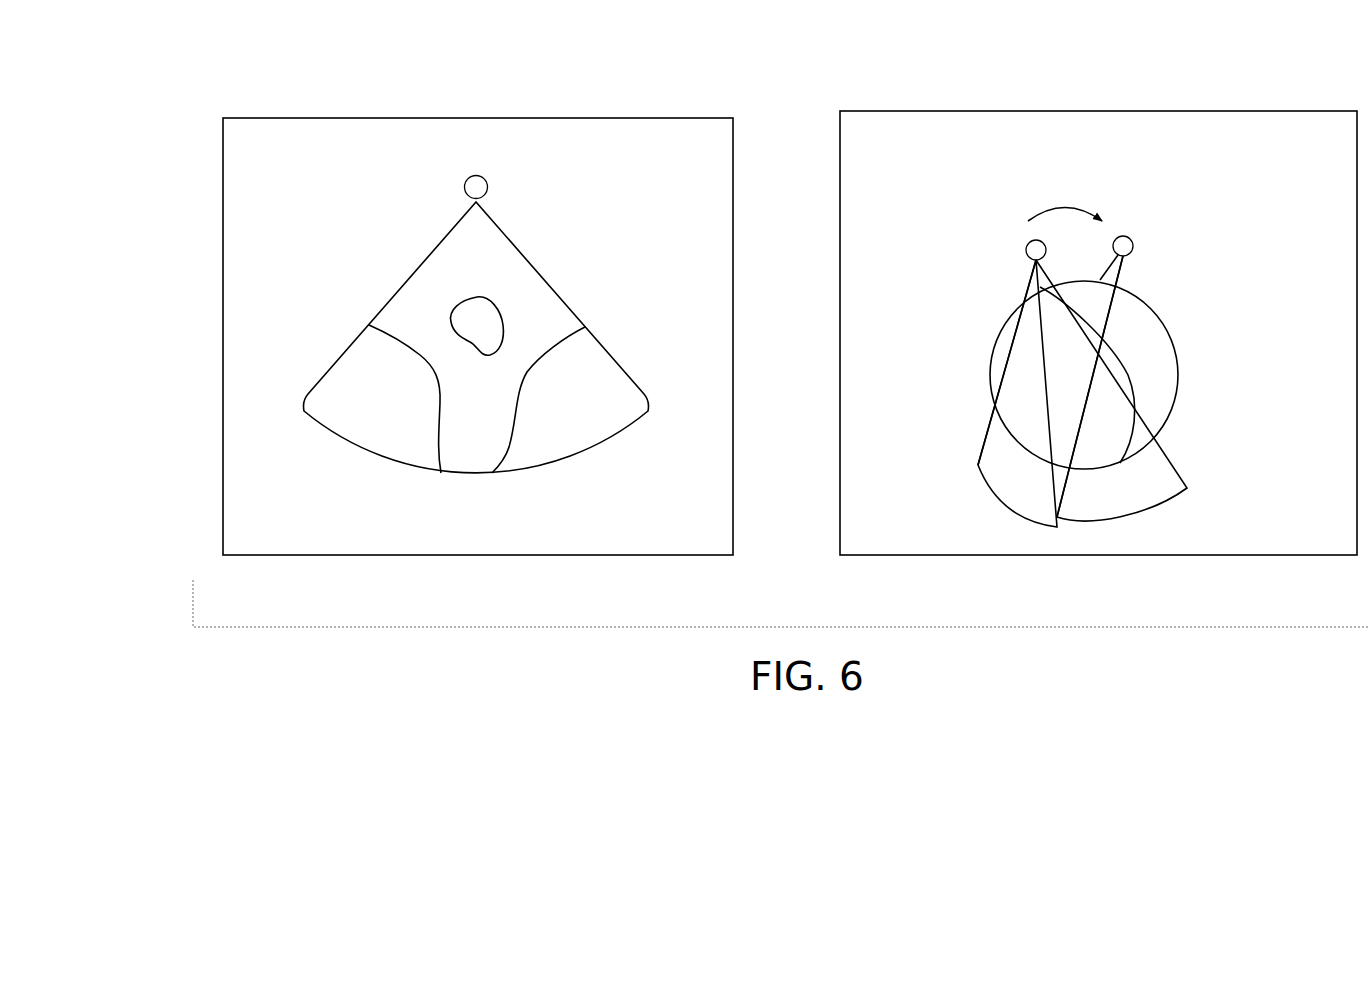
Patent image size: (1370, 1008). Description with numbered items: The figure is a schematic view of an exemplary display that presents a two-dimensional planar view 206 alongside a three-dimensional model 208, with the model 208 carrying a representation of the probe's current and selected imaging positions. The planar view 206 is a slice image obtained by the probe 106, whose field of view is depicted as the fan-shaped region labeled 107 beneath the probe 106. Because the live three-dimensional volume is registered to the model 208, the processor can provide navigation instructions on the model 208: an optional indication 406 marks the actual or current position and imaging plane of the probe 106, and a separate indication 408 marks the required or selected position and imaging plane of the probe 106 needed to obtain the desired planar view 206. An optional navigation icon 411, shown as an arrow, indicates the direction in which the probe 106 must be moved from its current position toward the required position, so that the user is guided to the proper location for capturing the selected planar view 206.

The 2D planar view 206 is at (406, 113).
The probe 106 is at (489, 185).
The ultrasound image field of view 107 is at (542, 277).
The 3D model 208 is at (1180, 373).
The indication of current probe position 406 is at (1025, 267).
The indication of required probe position 408 is at (1120, 270).
The navigation icon 411 is at (1062, 203).